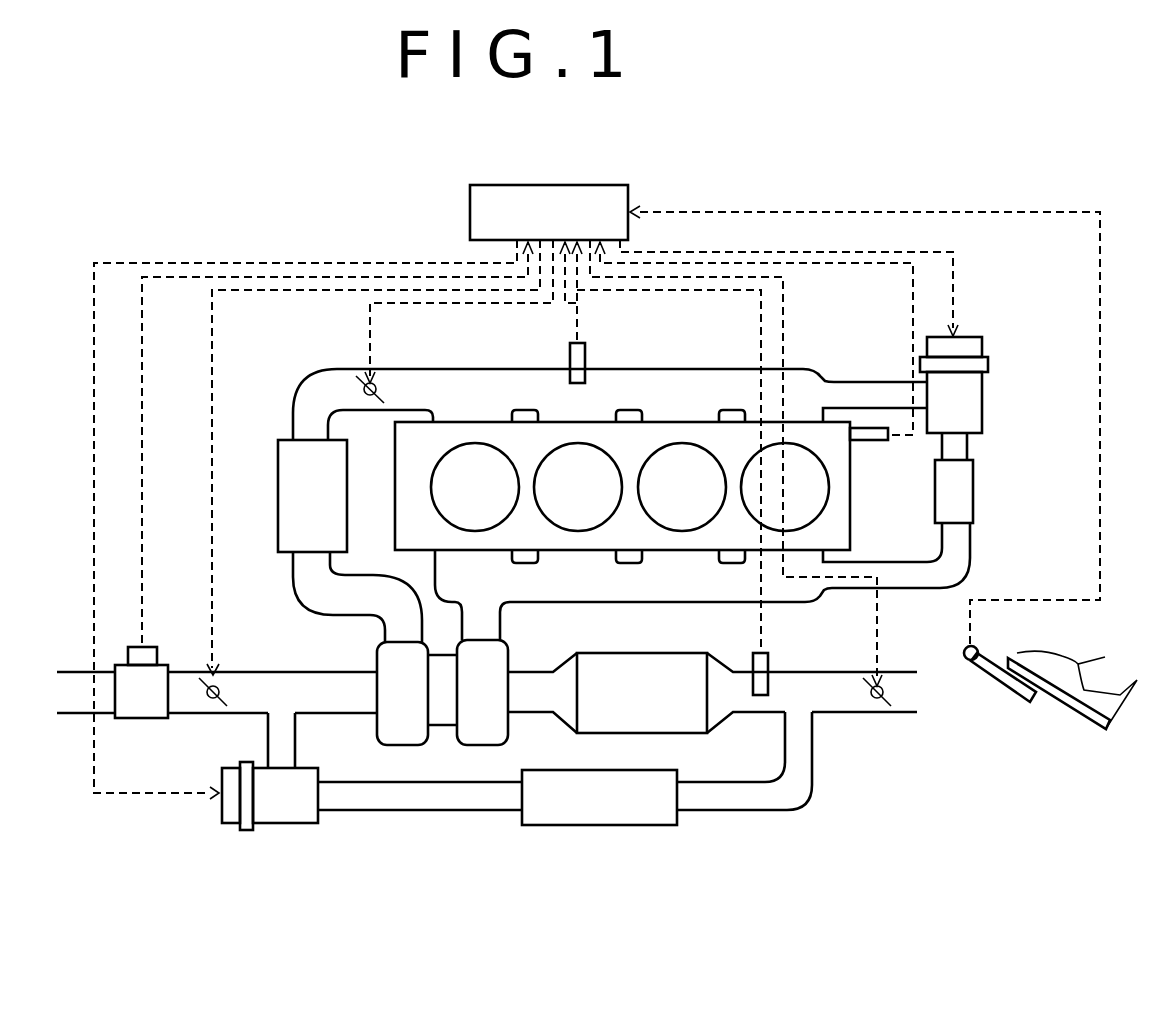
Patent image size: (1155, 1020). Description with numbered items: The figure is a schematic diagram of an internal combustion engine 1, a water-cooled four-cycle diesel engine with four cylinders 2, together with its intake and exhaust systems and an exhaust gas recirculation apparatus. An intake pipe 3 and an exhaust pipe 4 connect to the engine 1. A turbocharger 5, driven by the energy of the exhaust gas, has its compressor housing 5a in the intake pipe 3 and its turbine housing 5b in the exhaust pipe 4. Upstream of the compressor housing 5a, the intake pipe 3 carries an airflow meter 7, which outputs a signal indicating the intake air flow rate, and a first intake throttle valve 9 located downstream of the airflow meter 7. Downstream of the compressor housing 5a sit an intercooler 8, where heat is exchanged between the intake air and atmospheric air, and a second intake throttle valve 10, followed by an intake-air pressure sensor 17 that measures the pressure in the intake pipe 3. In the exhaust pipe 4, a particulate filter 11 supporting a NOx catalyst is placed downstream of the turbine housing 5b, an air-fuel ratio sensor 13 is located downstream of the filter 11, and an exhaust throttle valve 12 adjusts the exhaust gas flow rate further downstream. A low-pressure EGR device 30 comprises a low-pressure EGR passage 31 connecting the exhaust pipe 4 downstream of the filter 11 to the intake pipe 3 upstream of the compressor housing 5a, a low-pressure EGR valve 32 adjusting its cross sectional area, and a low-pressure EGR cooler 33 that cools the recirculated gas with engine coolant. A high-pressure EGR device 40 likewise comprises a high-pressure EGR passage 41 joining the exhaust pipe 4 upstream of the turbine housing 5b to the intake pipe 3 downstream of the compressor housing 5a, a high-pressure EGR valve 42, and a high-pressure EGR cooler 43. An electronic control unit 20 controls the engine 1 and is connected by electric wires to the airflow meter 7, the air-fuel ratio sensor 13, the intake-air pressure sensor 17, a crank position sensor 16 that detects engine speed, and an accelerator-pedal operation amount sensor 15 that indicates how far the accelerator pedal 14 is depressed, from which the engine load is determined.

The internal combustion engine 1 is at (292, 367).
The cylinders 2 is at (479, 443).
The intake pipe 3 is at (428, 370).
The exhaust pipe 4 is at (767, 605).
The turbocharger 5 is at (387, 754).
The compressor housing 5a is at (405, 747).
The turbine housing 5b is at (478, 747).
The airflow meter 7 is at (160, 647).
The intercooler 8 is at (278, 490).
The first intake throttle valve 9 is at (208, 698).
The second intake throttle valve 10 is at (371, 396).
The particulate filter 11 is at (647, 733).
The exhaust throttle valve 12 is at (877, 699).
The air-fuel ratio sensor 13 is at (755, 655).
The accelerator pedal 14 is at (1047, 703).
The accelerator-pedal operation amount sensor 15 is at (980, 650).
The crank position sensor 16 is at (870, 441).
The intake-air pressure sensor 17 is at (586, 353).
The electronic control unit 20 is at (470, 220).
The low-pressure EGR device 30 is at (233, 829).
The low-pressure EGR passage 31 is at (710, 812).
The low-pressure EGR valve 32 is at (268, 825).
The low-pressure EGR cooler 33 is at (600, 825).
The high-pressure EGR device 40 is at (989, 408).
The high-pressure EGR passage 41 is at (917, 590).
The high-pressure EGR valve 42 is at (982, 385).
The high-pressure EGR cooler 43 is at (973, 493).